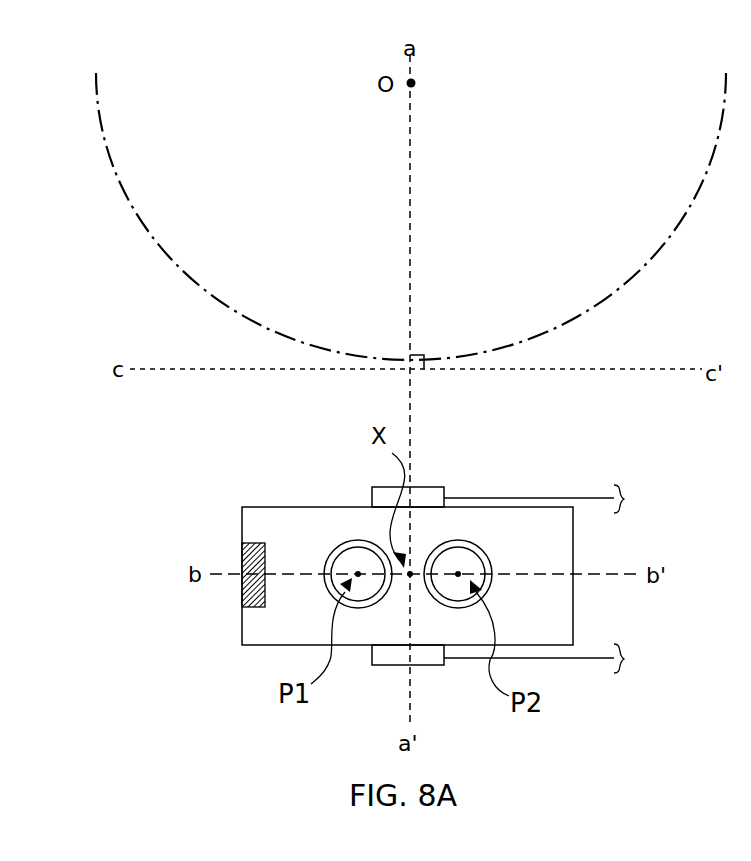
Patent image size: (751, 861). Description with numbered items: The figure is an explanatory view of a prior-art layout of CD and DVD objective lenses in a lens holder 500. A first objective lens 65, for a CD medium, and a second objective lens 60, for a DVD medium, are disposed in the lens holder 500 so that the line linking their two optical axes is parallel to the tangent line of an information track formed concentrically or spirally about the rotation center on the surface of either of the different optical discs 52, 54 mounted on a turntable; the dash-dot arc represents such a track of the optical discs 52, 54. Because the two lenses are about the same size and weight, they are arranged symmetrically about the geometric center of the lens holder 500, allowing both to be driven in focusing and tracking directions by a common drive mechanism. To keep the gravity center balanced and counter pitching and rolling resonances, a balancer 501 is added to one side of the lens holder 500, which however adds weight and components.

The optical disc 52 is at (608, 305).
The optical disc 54 is at (411, 219).
The lens holder 500 is at (573, 545).
The balancer 501 is at (257, 541).
The first objective lens 65 is at (343, 549).
The second objective lens 60 is at (483, 549).